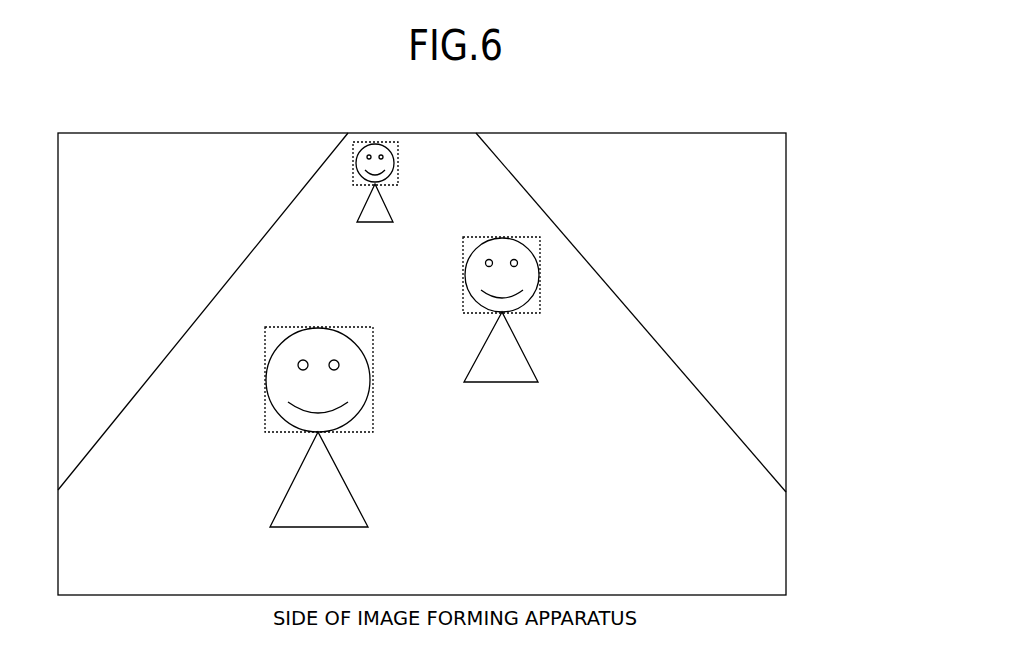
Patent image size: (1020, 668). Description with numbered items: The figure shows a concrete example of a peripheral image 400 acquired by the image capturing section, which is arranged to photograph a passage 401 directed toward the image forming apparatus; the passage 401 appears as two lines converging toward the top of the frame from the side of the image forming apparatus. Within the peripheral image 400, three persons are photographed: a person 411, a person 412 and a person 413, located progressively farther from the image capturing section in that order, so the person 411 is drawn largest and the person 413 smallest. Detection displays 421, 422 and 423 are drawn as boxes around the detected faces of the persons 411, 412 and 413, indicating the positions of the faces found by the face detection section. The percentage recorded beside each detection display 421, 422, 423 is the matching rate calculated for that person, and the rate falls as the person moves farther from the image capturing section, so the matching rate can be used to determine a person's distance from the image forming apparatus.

The peripheral image 400 is at (786, 240).
The passage 401 is at (770, 537).
The person 411 is at (358, 497).
The person 412 is at (530, 358).
The person 413 is at (398, 205).
The detection display 421 is at (375, 410).
The detection display 422 is at (462, 300).
The detection display 423 is at (405, 166).